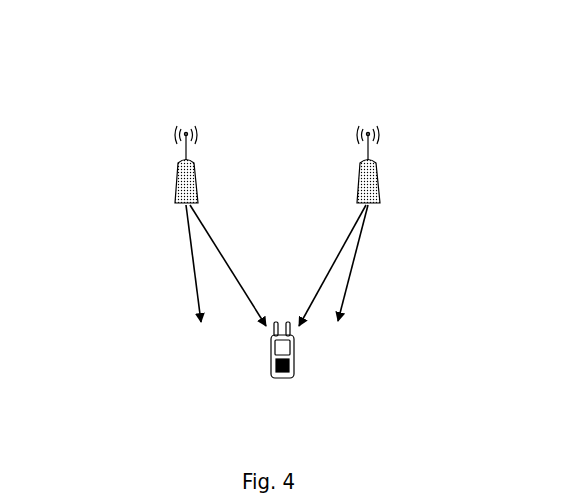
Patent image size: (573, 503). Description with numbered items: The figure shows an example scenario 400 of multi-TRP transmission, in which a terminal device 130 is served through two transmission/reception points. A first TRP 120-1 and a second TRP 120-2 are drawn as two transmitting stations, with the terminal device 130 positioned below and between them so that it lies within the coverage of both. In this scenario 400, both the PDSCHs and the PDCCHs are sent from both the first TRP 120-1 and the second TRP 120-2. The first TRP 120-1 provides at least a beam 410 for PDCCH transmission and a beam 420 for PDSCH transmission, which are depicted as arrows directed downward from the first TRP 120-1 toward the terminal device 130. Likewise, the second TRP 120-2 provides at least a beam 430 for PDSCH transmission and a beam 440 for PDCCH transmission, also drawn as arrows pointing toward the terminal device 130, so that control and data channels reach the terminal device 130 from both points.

The example scenario of multi-TRP transmission 400 is at (151, 60).
The first TRP 120-1 is at (186, 172).
The second TRP 120-2 is at (368, 182).
The beam for PDCCH transmission 410 is at (195, 265).
The beam for PDSCH transmission 420 is at (228, 263).
The beam for PDSCH transmission 430 is at (355, 225).
The beam for PDCCH transmission 440 is at (352, 270).
The terminal device 130 is at (290, 365).